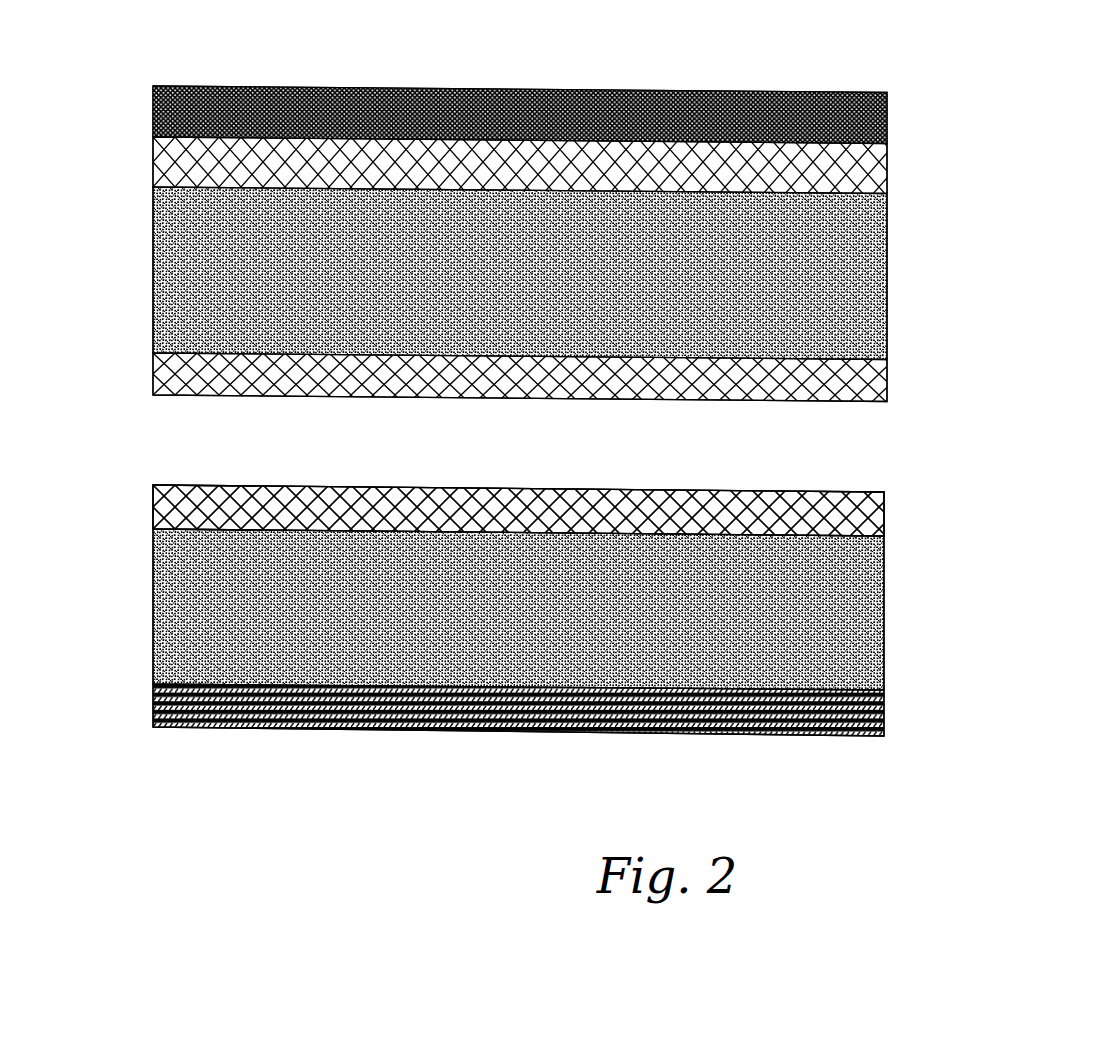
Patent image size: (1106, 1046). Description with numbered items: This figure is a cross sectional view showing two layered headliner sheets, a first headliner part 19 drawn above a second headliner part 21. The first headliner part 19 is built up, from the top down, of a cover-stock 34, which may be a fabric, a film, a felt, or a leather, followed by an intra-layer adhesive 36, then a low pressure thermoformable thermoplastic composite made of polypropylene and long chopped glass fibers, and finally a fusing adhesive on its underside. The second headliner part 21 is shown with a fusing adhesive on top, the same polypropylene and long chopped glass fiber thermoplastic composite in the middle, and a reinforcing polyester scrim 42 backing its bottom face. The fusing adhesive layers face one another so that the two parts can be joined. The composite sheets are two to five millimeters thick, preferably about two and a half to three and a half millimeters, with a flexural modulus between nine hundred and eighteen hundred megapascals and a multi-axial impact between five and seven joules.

The first headliner part 19 is at (940, 91).
The second headliner part 21 is at (960, 665).
The cover-stock material 34 is at (887, 122).
The intra-layer adhesive 36 is at (860, 168).
The polyester scrim 42 is at (884, 717).